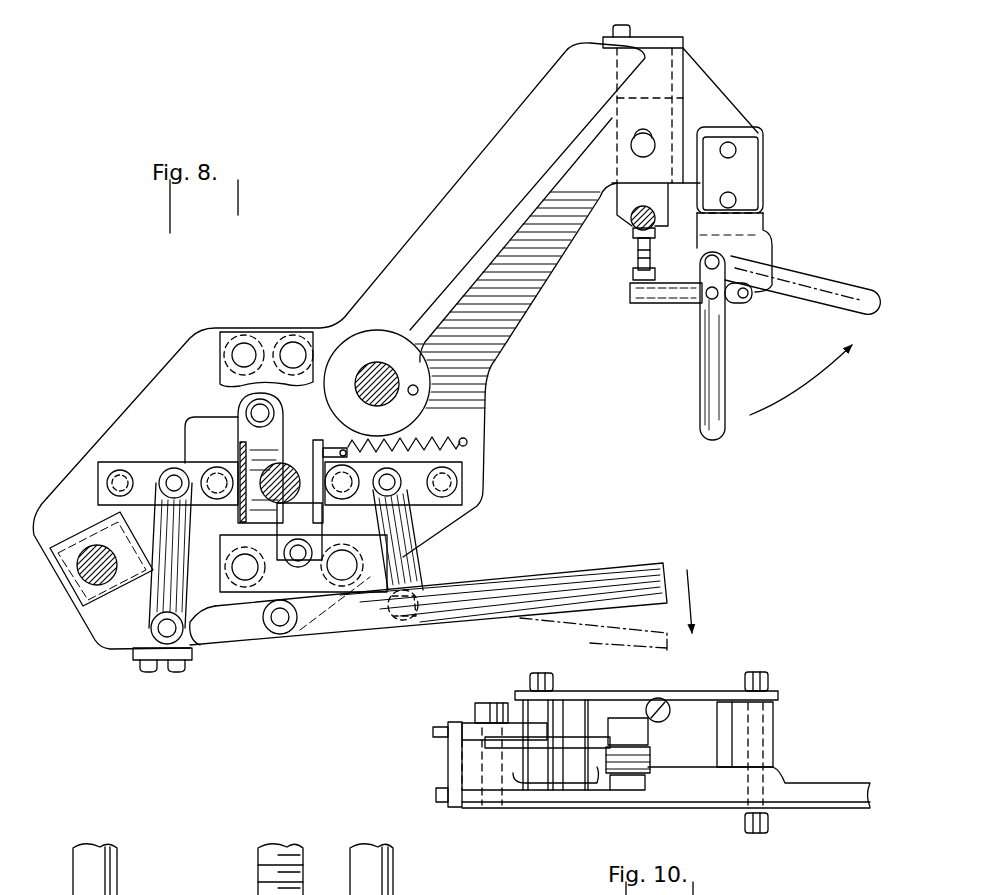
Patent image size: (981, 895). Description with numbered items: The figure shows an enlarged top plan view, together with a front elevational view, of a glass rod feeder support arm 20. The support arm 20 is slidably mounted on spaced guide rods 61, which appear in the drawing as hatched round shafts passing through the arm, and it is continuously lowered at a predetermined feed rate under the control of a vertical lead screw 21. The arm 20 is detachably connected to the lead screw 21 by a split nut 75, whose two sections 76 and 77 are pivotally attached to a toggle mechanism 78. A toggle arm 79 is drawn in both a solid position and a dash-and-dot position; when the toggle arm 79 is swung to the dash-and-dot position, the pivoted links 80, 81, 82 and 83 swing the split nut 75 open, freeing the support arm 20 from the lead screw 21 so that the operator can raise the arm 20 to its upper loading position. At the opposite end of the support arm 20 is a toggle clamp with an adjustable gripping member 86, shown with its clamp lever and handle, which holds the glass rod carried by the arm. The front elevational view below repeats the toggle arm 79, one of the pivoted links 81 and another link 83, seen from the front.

In FIG. 8, the glass rod support arm 20 is at (488, 172).
In FIG. 8, the adjustable gripping member 86 is at (662, 138).
In FIG. 8, the guide rod 61 is at (378, 367).
In FIG. 10, the guide rod 61 is at (385, 880).
In FIG. 8, the split nut 75 is at (290, 405).
In FIG. 8, the nut section 76 is at (246, 436).
In FIG. 8, the pivoted link 82 is at (145, 470).
In FIG. 8, the lead screw 21 is at (287, 463).
In FIG. 8, the nut section 77 is at (310, 453).
In FIG. 8, the pivoted link 83 is at (420, 473).
In FIG. 10, the pivoted link 83 is at (638, 767).
In FIG. 8, the pivoted link 80 is at (146, 556).
In FIG. 8, the pivoted link 81 is at (400, 557).
In FIG. 10, the pivoted link 81 is at (553, 745).
In FIG. 8, the toggle arm 79 is at (570, 580).
In FIG. 10, the toggle arm 79 is at (472, 728).
In FIG. 8, the toggle mechanism 78 is at (253, 643).